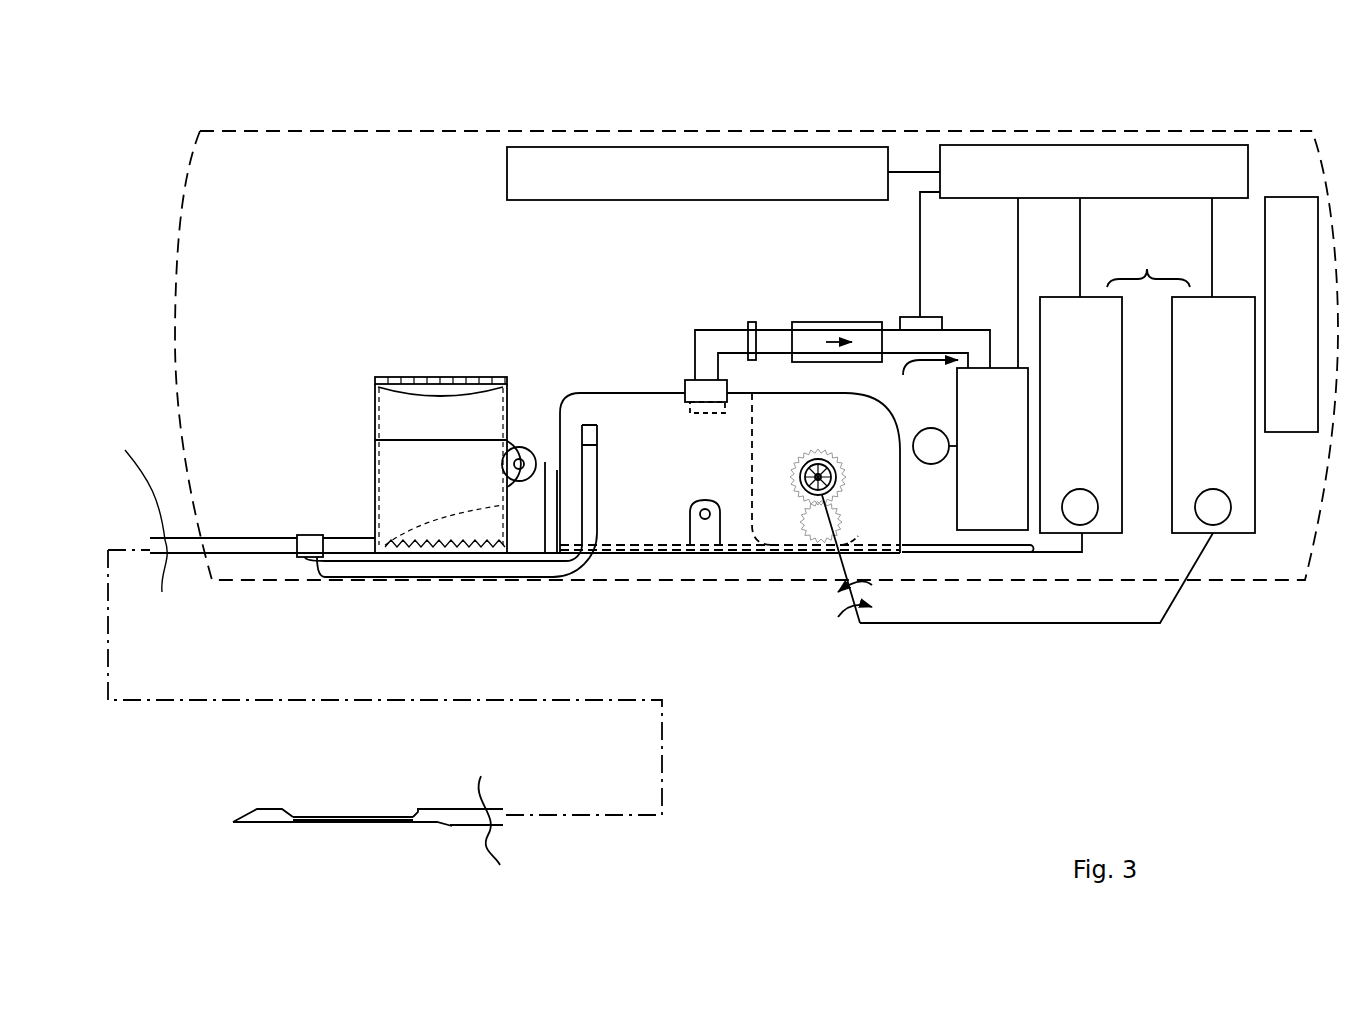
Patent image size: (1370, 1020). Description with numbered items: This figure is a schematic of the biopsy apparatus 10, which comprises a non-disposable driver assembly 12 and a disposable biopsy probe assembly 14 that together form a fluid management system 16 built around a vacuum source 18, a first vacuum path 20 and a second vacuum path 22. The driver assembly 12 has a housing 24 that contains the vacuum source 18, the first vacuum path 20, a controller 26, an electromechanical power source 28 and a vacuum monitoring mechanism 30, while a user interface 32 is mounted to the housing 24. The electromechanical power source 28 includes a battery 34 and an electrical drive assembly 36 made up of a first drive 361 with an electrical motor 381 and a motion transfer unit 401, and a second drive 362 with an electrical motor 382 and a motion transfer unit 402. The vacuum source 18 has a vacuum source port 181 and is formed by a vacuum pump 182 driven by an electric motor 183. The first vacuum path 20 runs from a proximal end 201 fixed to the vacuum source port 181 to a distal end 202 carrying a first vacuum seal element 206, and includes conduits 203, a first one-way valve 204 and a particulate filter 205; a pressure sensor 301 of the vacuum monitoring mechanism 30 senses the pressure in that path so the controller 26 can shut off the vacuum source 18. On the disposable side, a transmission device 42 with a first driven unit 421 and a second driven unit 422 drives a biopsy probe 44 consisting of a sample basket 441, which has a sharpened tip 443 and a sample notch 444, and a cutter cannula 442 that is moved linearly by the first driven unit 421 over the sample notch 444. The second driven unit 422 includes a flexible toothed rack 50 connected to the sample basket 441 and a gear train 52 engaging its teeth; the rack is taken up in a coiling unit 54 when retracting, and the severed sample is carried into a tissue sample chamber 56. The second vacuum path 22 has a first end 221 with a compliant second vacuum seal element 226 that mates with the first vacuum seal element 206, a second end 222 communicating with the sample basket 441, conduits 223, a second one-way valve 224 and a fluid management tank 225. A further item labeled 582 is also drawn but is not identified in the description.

The biopsy apparatus 10 is at (125, 170).
The driver assembly 12 is at (1324, 128).
The disposable biopsy probe assembly 14 is at (88, 628).
The fluid management system 16 is at (525, 400).
The vacuum source 18 is at (966, 420).
The first vacuum path 20 is at (720, 380).
The second vacuum path 22 is at (310, 810).
The housing 24 is at (492, 131).
The controller 26 is at (1068, 256).
The electromechanical power source 28 is at (1046, 548).
The vacuum monitoring mechanism 30 is at (802, 295).
The user interface 32 is at (697, 173).
The battery 34 is at (1291, 314).
The electrical drive assembly 36 is at (1147, 269).
The transmission device 42 is at (949, 589).
The biopsy probe 44 is at (268, 810).
The flexible toothed rack 50 is at (600, 545).
The gear train 52 is at (783, 500).
The coiling unit 54 is at (880, 560).
The tissue sample chamber 56 is at (445, 377).
The vacuum source port 181 is at (995, 368).
The vacuum pump 182 is at (992, 449).
The electric motor 183 is at (930, 432).
The proximal end 201 is at (916, 379).
The distal end 202 is at (683, 388).
The conduits 203 is at (710, 330).
The first one-way valve 204 is at (838, 322).
The particulate filter 205 is at (752, 322).
The first vacuum seal element 206 is at (715, 398).
The first end 221 is at (732, 408).
The second end 222 is at (412, 814).
The conduits 223 is at (410, 578).
The second one-way valve 224 is at (705, 413).
The fluid management tank 225 is at (618, 393).
The second vacuum seal element 226 is at (688, 407).
The pressure sensor 301 is at (933, 317).
The first drive 361 is at (1081, 415).
The second drive 362 is at (1213, 415).
The electrical motor 381 is at (1098, 508).
The electrical motor 382 is at (1231, 513).
The motion transfer unit 401 is at (1060, 553).
The motion transfer unit 402 is at (1165, 600).
The first driven unit 421 is at (985, 553).
The second driven unit 422 is at (852, 453).
The sample basket 441 is at (375, 825).
The cutter cannula 442 is at (458, 850).
The sharpened tip 443 is at (237, 825).
The sample notch 444 is at (290, 812).
The riser tube 582 is at (590, 410).